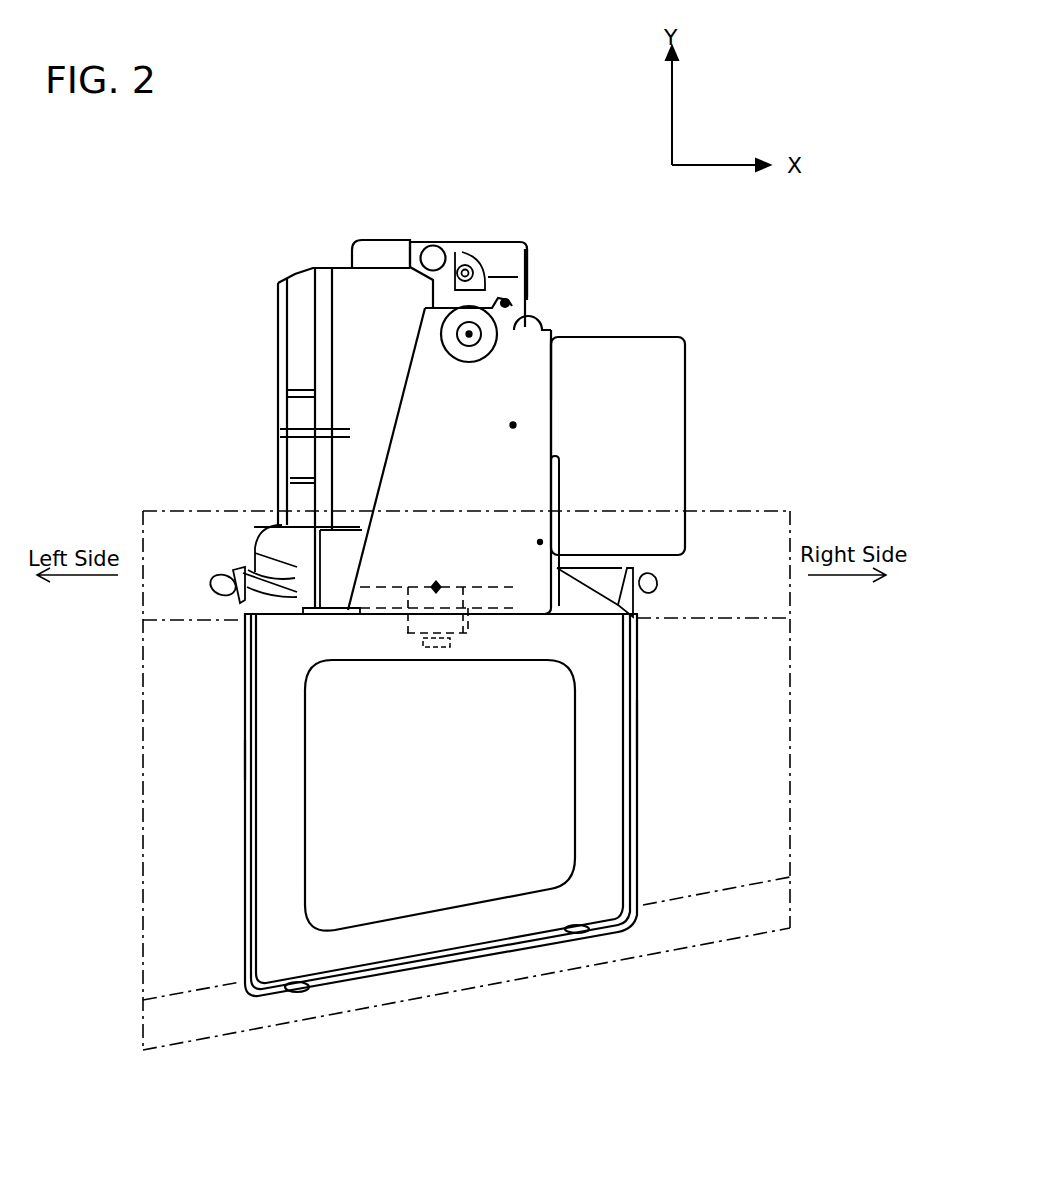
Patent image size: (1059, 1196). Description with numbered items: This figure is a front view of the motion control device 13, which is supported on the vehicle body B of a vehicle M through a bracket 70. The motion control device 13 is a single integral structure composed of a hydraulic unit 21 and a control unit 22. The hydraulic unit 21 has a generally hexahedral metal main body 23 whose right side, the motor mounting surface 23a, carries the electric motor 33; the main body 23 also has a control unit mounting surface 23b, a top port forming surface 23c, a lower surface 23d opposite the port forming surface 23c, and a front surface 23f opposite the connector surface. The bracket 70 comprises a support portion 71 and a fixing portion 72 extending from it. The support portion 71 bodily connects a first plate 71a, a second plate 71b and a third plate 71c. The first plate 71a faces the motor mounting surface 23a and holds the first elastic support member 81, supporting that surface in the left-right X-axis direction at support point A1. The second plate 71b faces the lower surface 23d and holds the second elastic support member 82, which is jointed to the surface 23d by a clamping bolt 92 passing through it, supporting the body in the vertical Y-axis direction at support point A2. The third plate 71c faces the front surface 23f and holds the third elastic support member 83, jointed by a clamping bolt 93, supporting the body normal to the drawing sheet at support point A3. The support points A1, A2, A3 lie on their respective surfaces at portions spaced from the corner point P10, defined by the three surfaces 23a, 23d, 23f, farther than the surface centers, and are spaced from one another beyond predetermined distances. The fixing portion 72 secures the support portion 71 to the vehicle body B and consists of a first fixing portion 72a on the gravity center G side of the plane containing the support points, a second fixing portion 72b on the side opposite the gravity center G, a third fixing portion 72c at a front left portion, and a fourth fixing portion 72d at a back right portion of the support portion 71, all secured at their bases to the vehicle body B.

The motion control device 13 is at (259, 266).
The hydraulic unit 21 is at (479, 421).
The control unit 22 is at (343, 247).
The main body 23 is at (438, 218).
The motor mounting surface 23a is at (528, 252).
The control unit mounting surface 23b is at (420, 260).
The port forming surface 23c is at (470, 238).
The surface opposite to the port forming surface 23d is at (467, 587).
The surface opposite to the connector surface 23f is at (517, 262).
The electric motor 33 is at (670, 403).
The bracket 70 is at (367, 383).
The support portion 71 is at (567, 446).
The first plate 71a is at (560, 512).
The second plate 71b is at (373, 617).
The third plate 71c is at (541, 383).
The fixing portion 72 is at (665, 663).
The first fixing portion 72a is at (615, 767).
The second fixing portion 72b is at (217, 582).
The third fixing portion 72c is at (270, 770).
The fourth fixing portion 72d is at (650, 578).
The first elastic support member 81 is at (625, 602).
The second elastic support member 82 is at (472, 608).
The third elastic support member 83 is at (497, 347).
The clamping bolt 92 is at (433, 650).
The clamping bolt 93 is at (466, 347).
The support point A1 is at (533, 542).
The support point A2 is at (437, 583).
The support point A3 is at (462, 335).
The gravity center G is at (510, 425).
The corner point P10 is at (540, 572).
The vehicle body B is at (168, 507).
The vehicle M is at (466, 750).